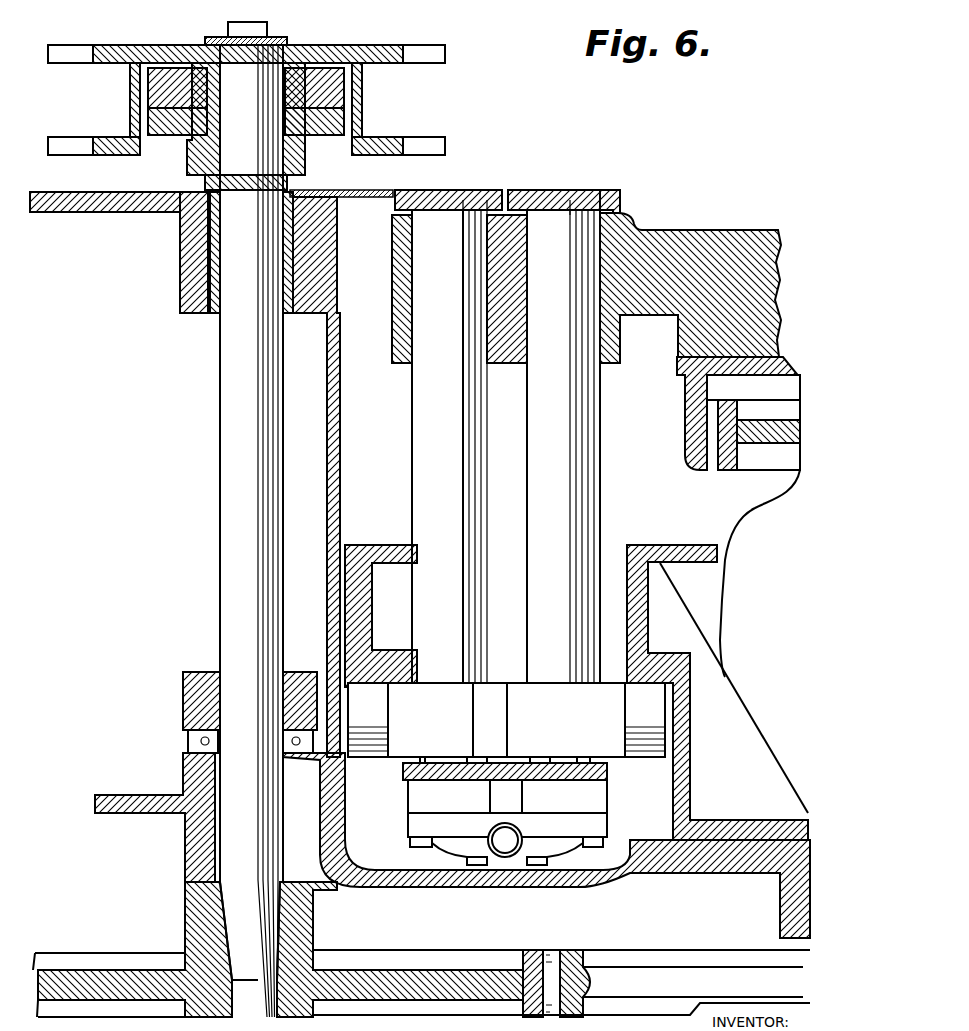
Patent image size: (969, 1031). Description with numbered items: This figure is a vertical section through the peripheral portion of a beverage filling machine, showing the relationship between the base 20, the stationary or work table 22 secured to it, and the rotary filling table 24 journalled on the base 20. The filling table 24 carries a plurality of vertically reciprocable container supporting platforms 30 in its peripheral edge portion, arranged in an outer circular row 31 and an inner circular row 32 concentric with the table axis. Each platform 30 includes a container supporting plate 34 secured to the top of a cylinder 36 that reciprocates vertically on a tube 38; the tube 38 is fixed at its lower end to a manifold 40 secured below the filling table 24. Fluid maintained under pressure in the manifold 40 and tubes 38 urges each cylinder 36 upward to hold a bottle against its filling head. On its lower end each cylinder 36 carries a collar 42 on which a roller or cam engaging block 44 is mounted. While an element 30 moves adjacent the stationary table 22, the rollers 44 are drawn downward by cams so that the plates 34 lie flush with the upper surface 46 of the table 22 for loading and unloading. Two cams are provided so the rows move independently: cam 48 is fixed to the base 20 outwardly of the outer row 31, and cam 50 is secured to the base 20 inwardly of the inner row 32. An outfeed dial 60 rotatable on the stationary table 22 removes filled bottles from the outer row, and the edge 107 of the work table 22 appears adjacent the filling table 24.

The base 20 is at (137, 797).
The stationary or work table 22 is at (83, 215).
The rotary filling table 24 is at (650, 243).
The container supporting platform 30 is at (614, 192).
The outer circular row 31 is at (468, 191).
The inner circular row 32 is at (572, 191).
The container supporting plate 34 is at (437, 202).
The cylinder 36 is at (433, 462).
The tube 38 is at (410, 758).
The manifold 40 is at (587, 825).
The collar 42 is at (550, 697).
The roller or cam engaging block 44 is at (373, 715).
The upper surface 46 is at (108, 192).
The cam 48 is at (358, 553).
The cam 50 is at (637, 547).
The outfeed dial 60 is at (330, 50).
The edge of work table 107 is at (402, 192).